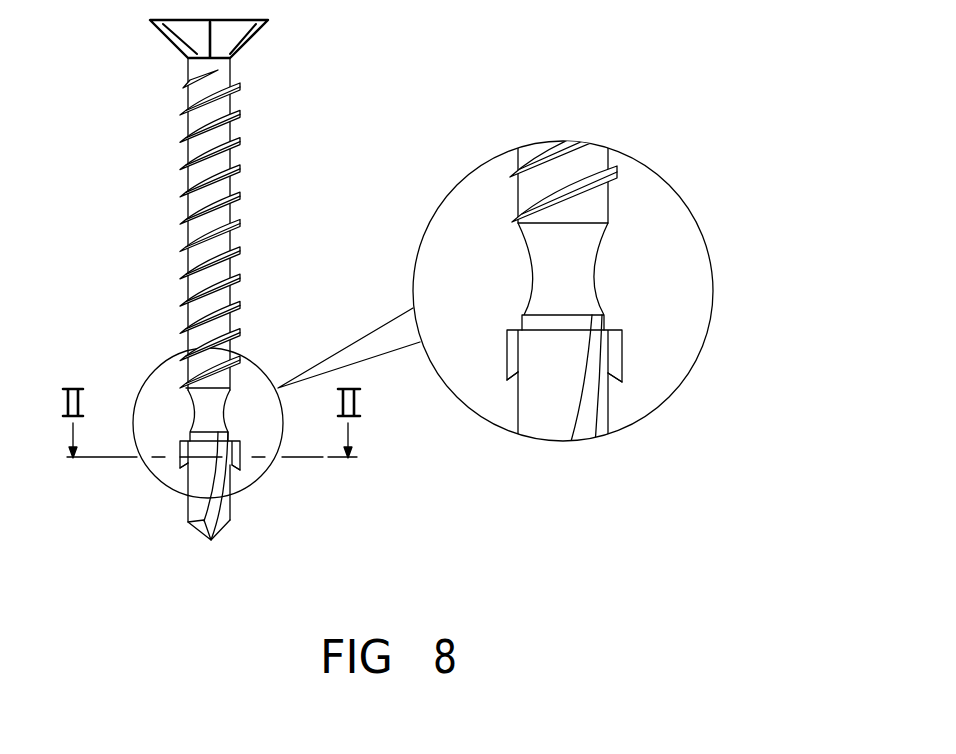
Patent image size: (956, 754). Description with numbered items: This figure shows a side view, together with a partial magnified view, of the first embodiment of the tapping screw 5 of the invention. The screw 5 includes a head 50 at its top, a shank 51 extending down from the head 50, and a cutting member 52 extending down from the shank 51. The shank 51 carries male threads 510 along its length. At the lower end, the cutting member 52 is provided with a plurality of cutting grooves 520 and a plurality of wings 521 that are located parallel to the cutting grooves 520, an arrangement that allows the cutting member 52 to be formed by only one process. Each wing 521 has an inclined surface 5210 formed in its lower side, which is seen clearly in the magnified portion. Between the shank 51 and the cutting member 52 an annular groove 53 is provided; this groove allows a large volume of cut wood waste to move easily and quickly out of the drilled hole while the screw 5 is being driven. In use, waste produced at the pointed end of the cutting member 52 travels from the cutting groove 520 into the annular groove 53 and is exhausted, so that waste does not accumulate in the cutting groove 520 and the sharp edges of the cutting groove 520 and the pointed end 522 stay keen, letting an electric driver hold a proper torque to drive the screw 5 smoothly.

The screw 5 is at (133, 150).
The head 50 is at (162, 37).
The shank 51 is at (198, 232).
The male threads 510 is at (240, 172).
The annular groove 53 is at (198, 418).
The wings 521 is at (180, 464).
The inclined surface 5210 is at (512, 383).
The cutting member 52 is at (190, 505).
The drill tip 522 is at (208, 543).
The cutting grooves 520 is at (233, 505).